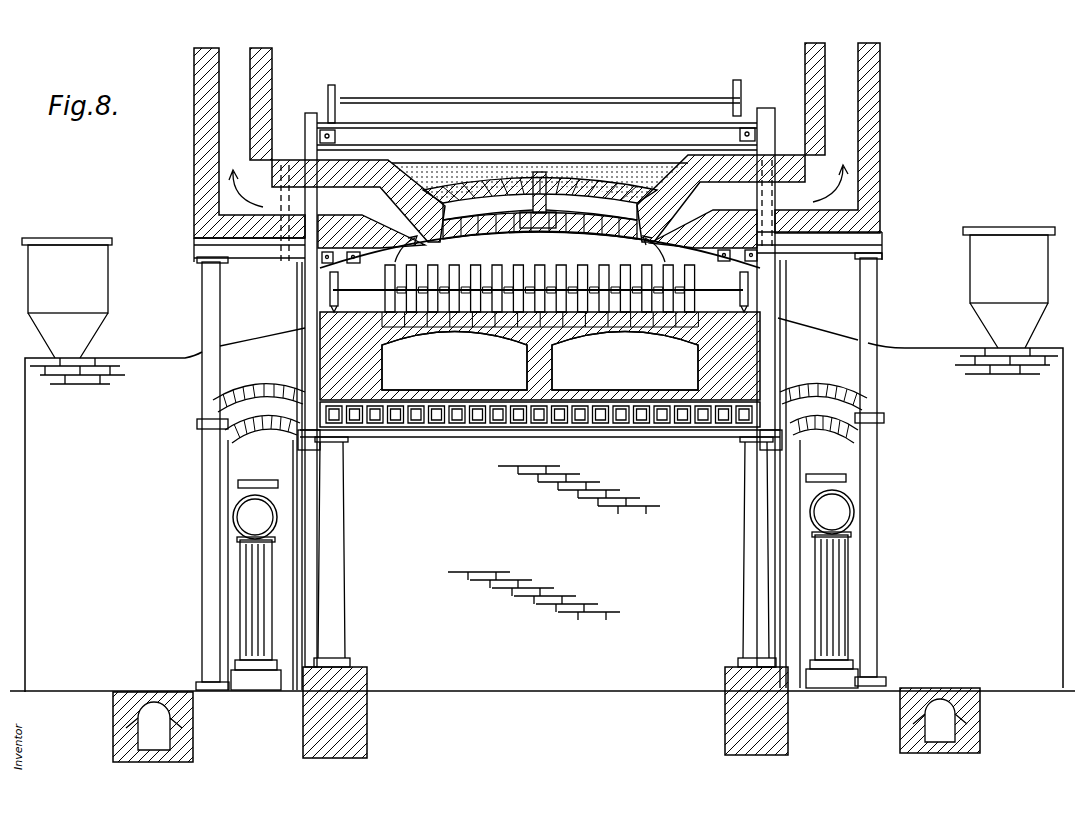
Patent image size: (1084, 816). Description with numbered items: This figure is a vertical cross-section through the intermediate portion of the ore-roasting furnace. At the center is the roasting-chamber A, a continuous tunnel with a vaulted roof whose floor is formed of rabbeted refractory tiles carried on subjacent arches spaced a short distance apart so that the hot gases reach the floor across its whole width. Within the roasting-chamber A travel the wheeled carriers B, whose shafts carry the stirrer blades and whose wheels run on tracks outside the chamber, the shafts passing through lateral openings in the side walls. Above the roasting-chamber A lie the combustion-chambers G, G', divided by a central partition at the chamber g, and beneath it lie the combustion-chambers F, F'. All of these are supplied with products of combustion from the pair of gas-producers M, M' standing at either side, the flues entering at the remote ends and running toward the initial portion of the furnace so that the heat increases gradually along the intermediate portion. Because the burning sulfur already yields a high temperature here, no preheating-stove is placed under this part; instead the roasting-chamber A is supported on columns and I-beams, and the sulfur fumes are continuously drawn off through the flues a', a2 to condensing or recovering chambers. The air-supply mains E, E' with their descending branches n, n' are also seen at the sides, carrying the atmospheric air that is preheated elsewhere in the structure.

The flue a' is at (304, 155).
The flue a2 is at (848, 128).
The combustion-chamber G is at (540, 199).
The chamber g is at (542, 200).
The combustion-chamber G' is at (591, 210).
The roasting-chamber A is at (490, 266).
The wheeled carriers B is at (612, 288).
The combustion-chamber F is at (454, 361).
The combustion-chamber F' is at (625, 361).
The gas-producer M is at (163, 465).
The gas-producer M' is at (920, 457).
The air-supply main E is at (223, 509).
The air-supply main E' is at (853, 504).
The descending branch n is at (230, 613).
The descending branch n' is at (861, 610).